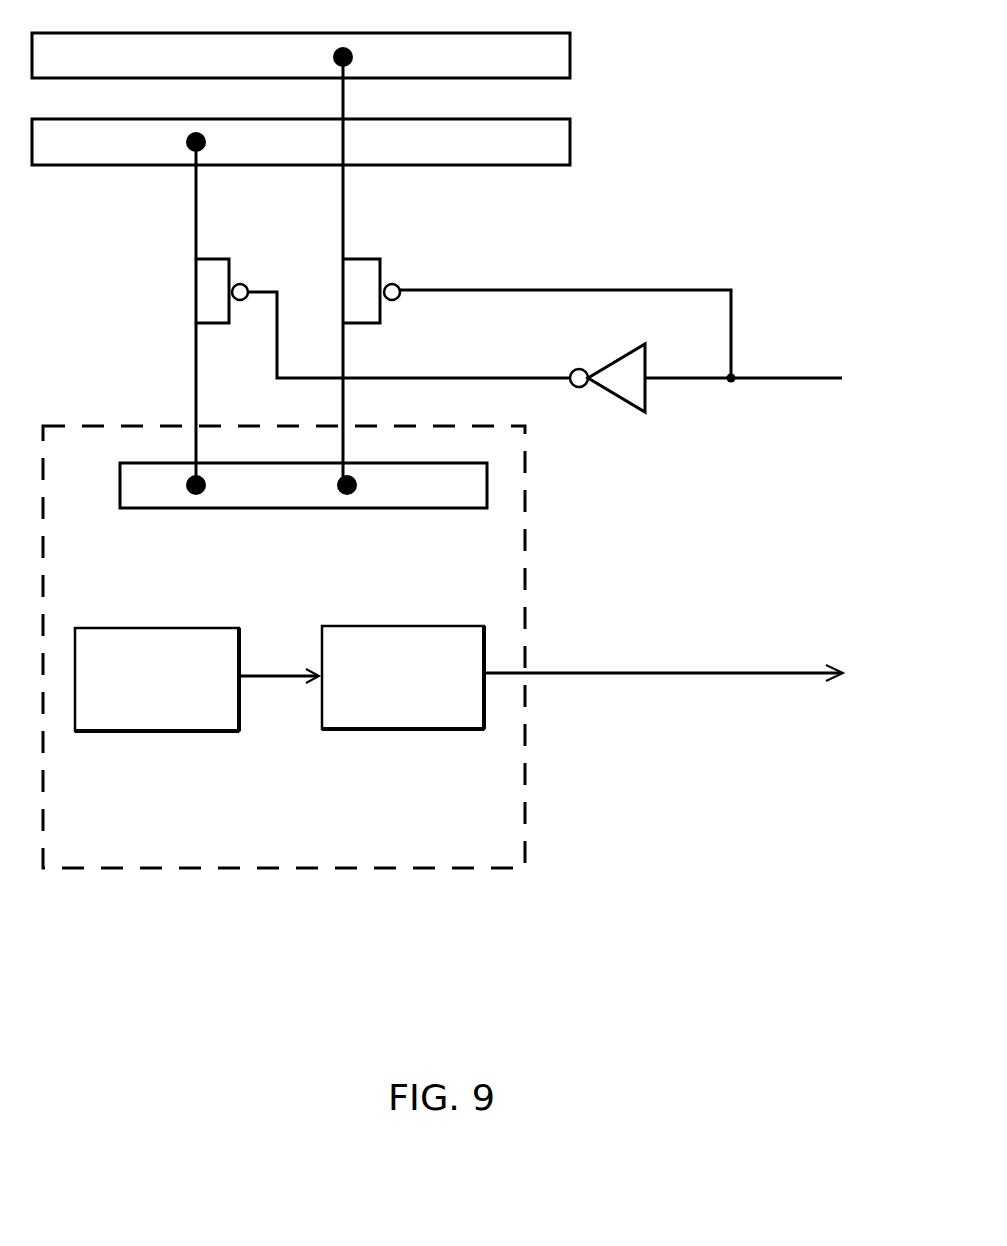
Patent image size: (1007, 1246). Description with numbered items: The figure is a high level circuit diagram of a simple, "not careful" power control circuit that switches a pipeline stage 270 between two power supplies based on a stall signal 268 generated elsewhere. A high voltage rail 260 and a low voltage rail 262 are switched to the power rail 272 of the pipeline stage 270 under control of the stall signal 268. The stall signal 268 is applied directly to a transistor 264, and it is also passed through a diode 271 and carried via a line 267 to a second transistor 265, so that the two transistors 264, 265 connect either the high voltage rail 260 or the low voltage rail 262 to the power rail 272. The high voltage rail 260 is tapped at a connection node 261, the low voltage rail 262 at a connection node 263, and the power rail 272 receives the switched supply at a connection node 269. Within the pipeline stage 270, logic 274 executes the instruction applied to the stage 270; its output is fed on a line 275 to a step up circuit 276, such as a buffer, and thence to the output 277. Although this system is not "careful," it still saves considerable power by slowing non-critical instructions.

The high voltage rail 260 is at (438, 67).
The high voltage rail connection node 261 is at (338, 50).
The low voltage rail 262 is at (485, 154).
The low voltage rail connection node 263 is at (190, 152).
The transistor 264 is at (400, 268).
The transistor 265 is at (230, 247).
The line 267 is at (400, 378).
The stall signal 268 is at (580, 290).
The power rail connection node 269 is at (188, 493).
The pipeline stage 270 is at (133, 858).
The diode 271 is at (618, 386).
The power rail 272 is at (472, 475).
The logic 274 is at (116, 720).
The line 275 is at (268, 678).
The step up circuit 276 is at (357, 718).
The output 277 is at (570, 673).